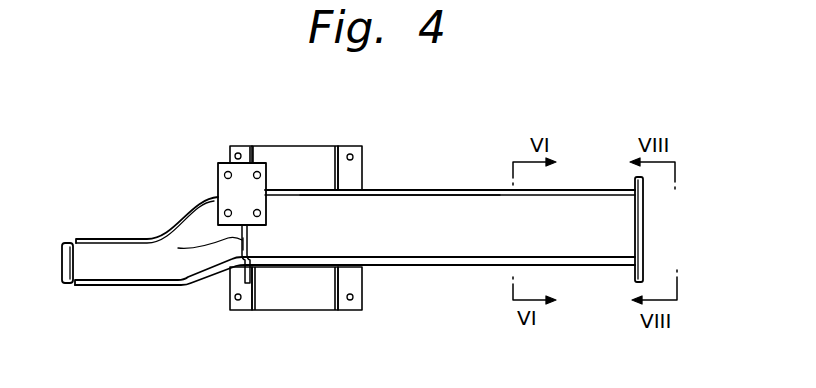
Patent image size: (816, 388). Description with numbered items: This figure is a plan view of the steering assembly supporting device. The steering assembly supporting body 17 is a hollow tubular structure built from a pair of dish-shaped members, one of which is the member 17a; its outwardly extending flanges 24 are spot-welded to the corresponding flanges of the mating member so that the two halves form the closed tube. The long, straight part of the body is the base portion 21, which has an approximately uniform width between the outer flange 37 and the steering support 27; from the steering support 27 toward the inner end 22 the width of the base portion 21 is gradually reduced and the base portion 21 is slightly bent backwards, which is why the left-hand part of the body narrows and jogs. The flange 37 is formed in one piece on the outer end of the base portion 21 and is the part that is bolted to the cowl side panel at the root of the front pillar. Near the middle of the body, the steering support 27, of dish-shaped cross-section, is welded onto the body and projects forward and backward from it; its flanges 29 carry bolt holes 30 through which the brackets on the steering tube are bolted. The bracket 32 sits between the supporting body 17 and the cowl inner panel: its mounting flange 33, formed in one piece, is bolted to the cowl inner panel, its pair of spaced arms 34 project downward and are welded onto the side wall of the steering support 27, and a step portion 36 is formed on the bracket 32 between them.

The steering assembly supporting body 17 is at (405, 185).
The member 17a is at (480, 213).
The base portion 21 is at (443, 208).
The inner end 22 is at (71, 243).
The outwardly extending flanges 24 is at (587, 193).
The steering support 27 is at (312, 290).
The flanges 29 is at (235, 146).
The bolt holes 30 is at (239, 154).
The bracket 32 is at (197, 248).
The mounting flange 33 is at (223, 190).
The arms 34 is at (250, 277).
The step portion 36 is at (250, 247).
The flange 37 is at (643, 217).